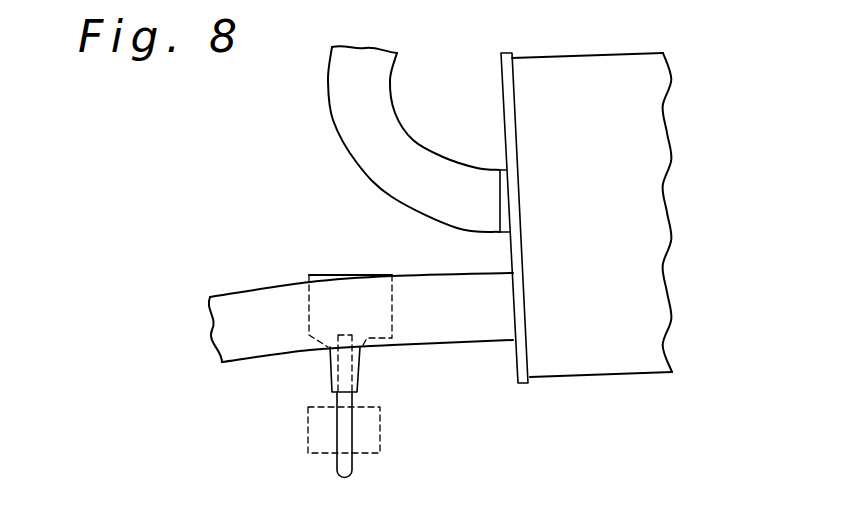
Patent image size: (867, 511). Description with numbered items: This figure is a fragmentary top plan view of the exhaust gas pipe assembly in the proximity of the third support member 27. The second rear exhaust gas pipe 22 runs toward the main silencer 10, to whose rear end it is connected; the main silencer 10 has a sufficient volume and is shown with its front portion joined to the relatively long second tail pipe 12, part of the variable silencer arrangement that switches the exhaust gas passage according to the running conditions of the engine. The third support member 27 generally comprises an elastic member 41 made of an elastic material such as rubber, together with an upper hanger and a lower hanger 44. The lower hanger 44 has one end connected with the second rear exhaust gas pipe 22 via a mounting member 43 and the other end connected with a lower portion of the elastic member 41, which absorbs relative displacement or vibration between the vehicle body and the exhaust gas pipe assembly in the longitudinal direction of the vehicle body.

The main silencer 10 is at (613, 377).
The second tail pipe 12 is at (342, 119).
The second rear exhaust gas pipe 22 is at (440, 343).
The third support member 27 is at (282, 432).
The elastic member 41 is at (380, 453).
The mounting member 43 is at (392, 318).
The lower hanger 44 is at (352, 403).